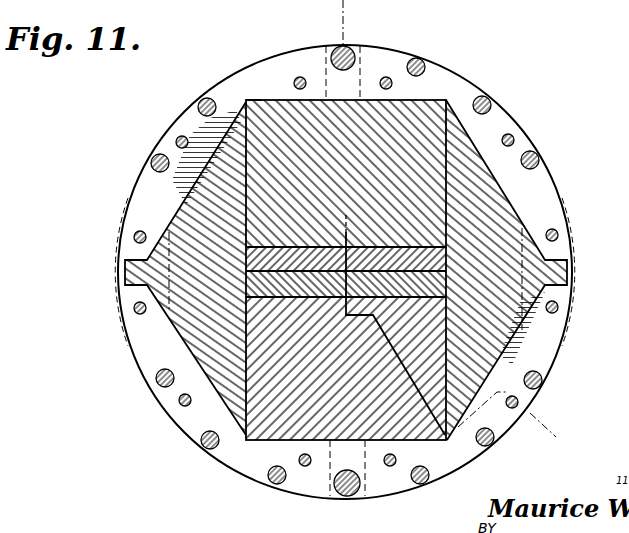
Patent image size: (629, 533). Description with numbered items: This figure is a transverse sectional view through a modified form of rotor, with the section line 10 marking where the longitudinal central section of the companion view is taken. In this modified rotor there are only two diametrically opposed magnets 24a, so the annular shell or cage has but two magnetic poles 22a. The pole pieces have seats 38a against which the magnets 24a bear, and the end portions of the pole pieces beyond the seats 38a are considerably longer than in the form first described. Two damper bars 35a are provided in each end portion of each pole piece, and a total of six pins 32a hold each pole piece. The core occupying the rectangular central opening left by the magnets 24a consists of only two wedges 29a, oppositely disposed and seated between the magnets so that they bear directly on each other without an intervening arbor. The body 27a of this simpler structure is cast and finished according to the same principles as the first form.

The magnetic pole 22a is at (377, 66).
The magnet 24a is at (427, 113).
The body 27a is at (500, 281).
The wedge 29a is at (438, 250).
The pin 32a is at (136, 234).
The damper bar 35a is at (161, 158).
The seat 38a is at (258, 101).
The section line 10- 10 is at (322, 9).